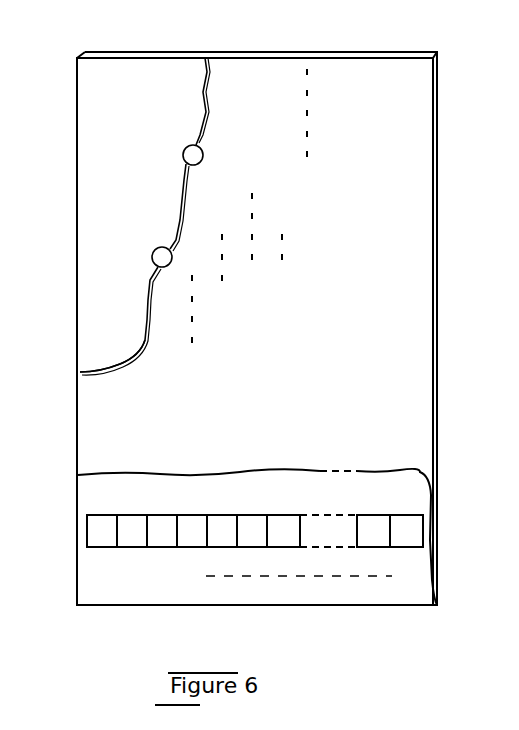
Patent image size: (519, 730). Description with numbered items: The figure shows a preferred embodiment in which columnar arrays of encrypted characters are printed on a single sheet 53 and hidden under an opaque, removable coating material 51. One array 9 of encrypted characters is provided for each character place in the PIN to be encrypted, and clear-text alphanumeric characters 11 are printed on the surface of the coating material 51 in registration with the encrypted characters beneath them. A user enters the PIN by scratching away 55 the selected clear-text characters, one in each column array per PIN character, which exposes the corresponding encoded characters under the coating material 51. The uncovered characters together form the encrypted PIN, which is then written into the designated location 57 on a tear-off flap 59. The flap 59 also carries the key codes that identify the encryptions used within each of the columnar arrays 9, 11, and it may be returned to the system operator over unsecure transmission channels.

The array of encrypted characters 9 is at (176, 90).
The alphanumeric characters 11 is at (278, 62).
The single sheet 53 is at (297, 60).
The scratched-away areas 55 is at (183, 158).
The opaque removable coating material 51 is at (92, 372).
The tear-off flap 59 is at (97, 474).
The designated location 57 is at (87, 520).